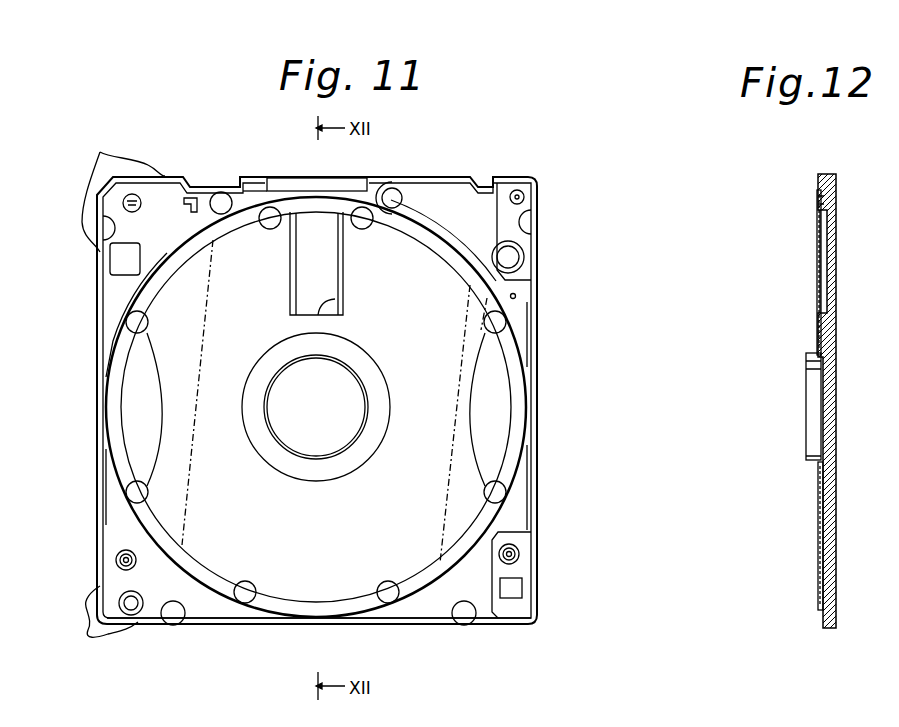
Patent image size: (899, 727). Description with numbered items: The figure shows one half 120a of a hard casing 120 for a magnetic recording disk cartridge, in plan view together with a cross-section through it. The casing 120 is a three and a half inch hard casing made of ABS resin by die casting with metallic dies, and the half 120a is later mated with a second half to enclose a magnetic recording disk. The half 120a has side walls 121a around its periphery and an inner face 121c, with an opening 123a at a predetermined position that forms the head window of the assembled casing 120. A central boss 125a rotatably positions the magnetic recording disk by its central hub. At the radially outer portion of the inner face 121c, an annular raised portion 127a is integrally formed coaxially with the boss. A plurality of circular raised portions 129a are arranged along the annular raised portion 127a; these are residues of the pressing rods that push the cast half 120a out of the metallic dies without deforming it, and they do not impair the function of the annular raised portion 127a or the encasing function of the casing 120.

In FIG. 11, the hard casing 120 is at (431, 172).
In FIG. 12, the hard casing 120 is at (830, 175).
In FIG. 11, the half of the casing 120a is at (345, 626).
In FIG. 11, the side walls 121a is at (109, 397).
In FIG. 12, the side walls 121a is at (814, 277).
In FIG. 11, the inner face 121c is at (395, 531).
In FIG. 11, the opening 123a is at (338, 303).
In FIG. 11, the central boss 125a is at (291, 458).
In FIG. 12, the central boss 125a is at (812, 462).
In FIG. 11, the annular raised portion 127a is at (114, 445).
In FIG. 12, the annular raised portion 127a is at (817, 200).
In FIG. 11, the circular raised portions 129a is at (140, 481).